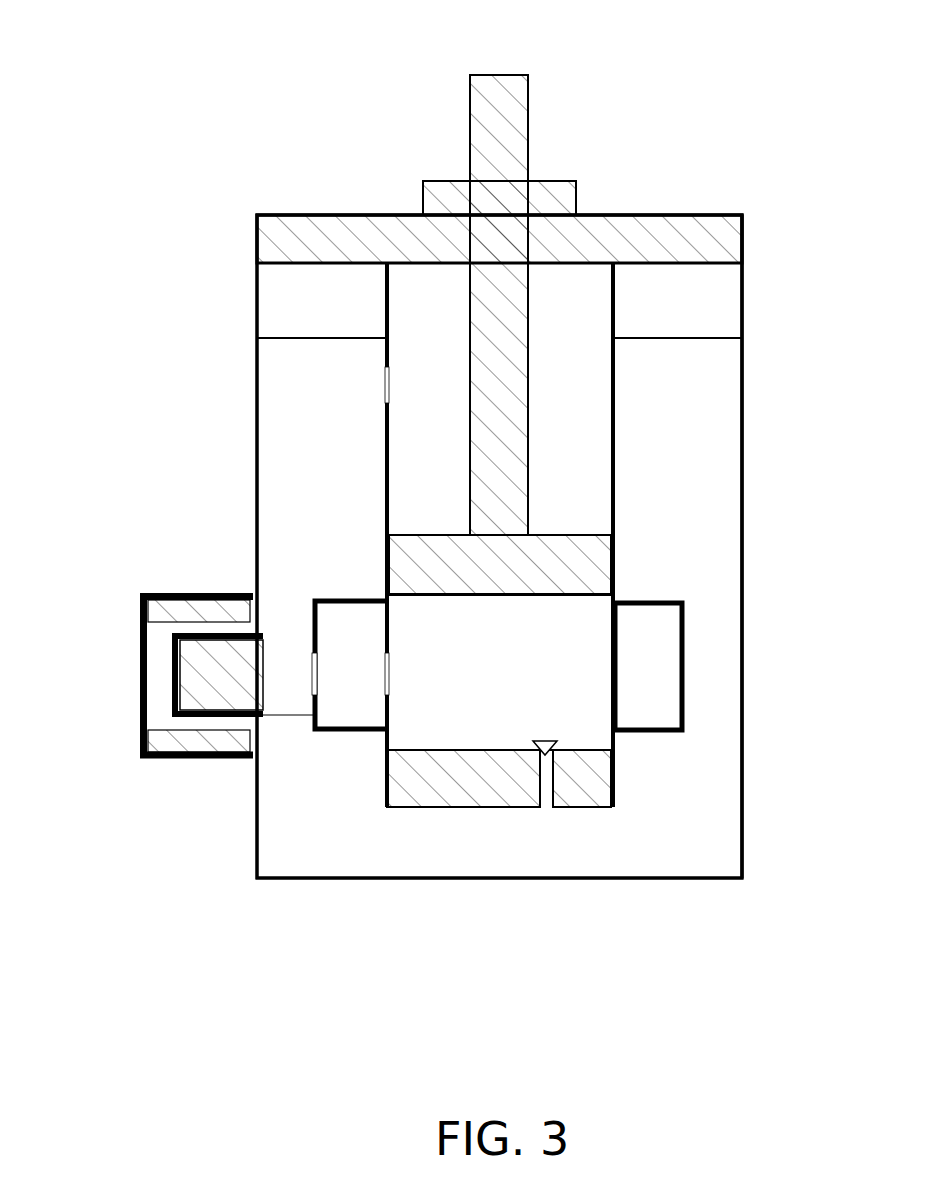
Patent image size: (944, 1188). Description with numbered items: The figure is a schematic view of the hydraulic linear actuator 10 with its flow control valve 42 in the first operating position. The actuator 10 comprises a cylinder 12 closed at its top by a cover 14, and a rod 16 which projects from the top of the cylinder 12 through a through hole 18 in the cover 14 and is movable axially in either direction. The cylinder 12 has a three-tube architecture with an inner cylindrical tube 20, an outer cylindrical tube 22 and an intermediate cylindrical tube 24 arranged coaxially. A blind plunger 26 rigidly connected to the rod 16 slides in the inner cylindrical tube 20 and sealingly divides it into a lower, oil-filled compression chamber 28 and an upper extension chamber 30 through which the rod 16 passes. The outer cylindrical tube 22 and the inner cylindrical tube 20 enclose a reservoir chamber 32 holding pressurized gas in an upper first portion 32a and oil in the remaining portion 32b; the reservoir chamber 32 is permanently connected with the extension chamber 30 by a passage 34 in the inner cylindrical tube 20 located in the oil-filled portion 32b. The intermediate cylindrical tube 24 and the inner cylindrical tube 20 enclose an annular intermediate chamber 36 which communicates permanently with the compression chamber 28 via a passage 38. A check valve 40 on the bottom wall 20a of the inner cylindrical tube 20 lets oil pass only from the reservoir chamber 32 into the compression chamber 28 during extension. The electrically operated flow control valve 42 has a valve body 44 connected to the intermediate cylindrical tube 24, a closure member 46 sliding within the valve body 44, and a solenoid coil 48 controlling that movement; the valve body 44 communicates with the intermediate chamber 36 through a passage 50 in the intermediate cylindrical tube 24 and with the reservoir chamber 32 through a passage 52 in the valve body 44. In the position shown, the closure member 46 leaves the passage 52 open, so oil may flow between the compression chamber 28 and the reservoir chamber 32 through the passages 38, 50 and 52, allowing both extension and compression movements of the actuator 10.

The hydraulic linear actuator 10 is at (693, 170).
The cylinder 12 is at (748, 537).
The cover 14 is at (307, 240).
The rod 16 is at (530, 131).
The through hole 18 is at (473, 242).
The inner cylindrical tube 20 is at (615, 445).
The bottom wall 20a is at (510, 808).
The outer cylindrical tube 22 is at (742, 482).
The intermediate cylindrical tube 24 is at (683, 673).
The plunger 26 is at (560, 597).
The compression chamber 28 is at (470, 720).
The extension chamber 30 is at (590, 380).
The reservoir chamber 32 is at (303, 455).
The first portion of reservoir chamber 32a is at (300, 302).
The remaining portion of reservoir chamber 32b is at (700, 805).
The passage 34 is at (387, 402).
The intermediate chamber 36 is at (657, 682).
The passage 38 is at (383, 693).
The check valve 40 is at (545, 741).
The flow control valve 42 is at (133, 606).
The valve body 44 is at (215, 633).
The closure member 46 is at (215, 700).
The solenoid coil 48 is at (172, 740).
The passage 50 is at (317, 695).
The passage 52 is at (265, 715).